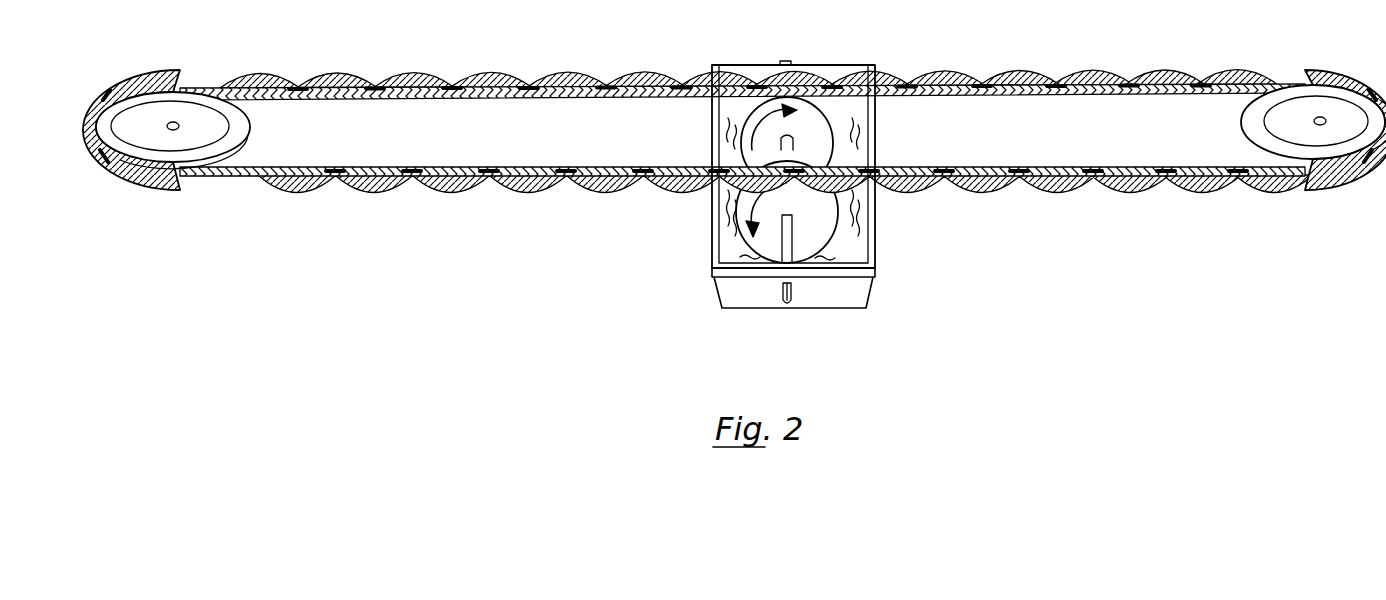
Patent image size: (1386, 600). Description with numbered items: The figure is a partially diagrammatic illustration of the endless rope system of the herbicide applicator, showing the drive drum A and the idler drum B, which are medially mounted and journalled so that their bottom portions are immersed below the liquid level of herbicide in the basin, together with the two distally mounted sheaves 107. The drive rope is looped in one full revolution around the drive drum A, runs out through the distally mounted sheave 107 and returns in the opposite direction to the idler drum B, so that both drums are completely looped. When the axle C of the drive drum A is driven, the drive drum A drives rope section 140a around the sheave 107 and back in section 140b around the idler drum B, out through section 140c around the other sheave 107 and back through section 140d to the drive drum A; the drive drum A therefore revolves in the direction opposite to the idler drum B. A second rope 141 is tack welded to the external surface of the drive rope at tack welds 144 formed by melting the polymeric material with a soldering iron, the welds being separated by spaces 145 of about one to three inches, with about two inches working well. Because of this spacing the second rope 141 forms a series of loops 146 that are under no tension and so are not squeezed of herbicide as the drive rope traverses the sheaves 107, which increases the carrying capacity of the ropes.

The distally mounted sheaves 107 is at (215, 117).
The tack weld 144 is at (734, 157).
The spacing between tack welds 145 is at (446, 100).
The loops 146 is at (766, 157).
The second rope 141 is at (623, 208).
The rope section 140a is at (1055, 94).
The rope section 140b is at (1070, 167).
The rope section 140c is at (543, 171).
The rope section 140d is at (496, 98).
The drive drum A is at (805, 128).
The idler drum B is at (815, 215).
The axle C is at (790, 252).